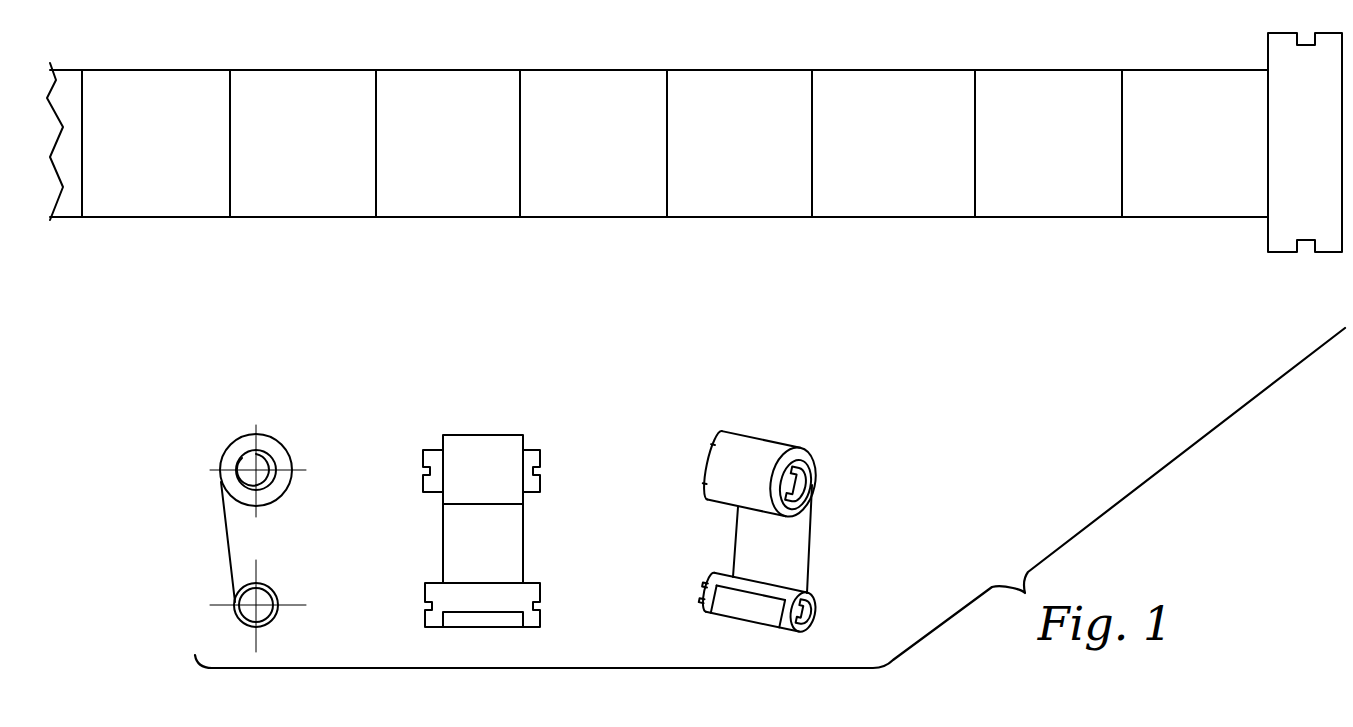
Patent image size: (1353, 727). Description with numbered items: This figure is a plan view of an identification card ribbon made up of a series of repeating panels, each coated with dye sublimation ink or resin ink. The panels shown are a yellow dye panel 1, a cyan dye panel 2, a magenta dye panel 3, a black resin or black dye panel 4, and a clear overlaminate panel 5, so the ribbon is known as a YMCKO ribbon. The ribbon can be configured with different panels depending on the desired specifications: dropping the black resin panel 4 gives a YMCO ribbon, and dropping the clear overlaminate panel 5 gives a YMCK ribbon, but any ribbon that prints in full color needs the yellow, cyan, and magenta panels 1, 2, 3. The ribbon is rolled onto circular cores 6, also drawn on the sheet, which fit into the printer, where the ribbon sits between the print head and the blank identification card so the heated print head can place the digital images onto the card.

The yellow dye panel 1 is at (325, 190).
The cyan dye panel 2 is at (478, 192).
The magenta dye panel 3 is at (622, 189).
The black resin panel 4 is at (763, 189).
The clear overlaminate panel 5 is at (913, 189).
The circular core 6 is at (1302, 208).